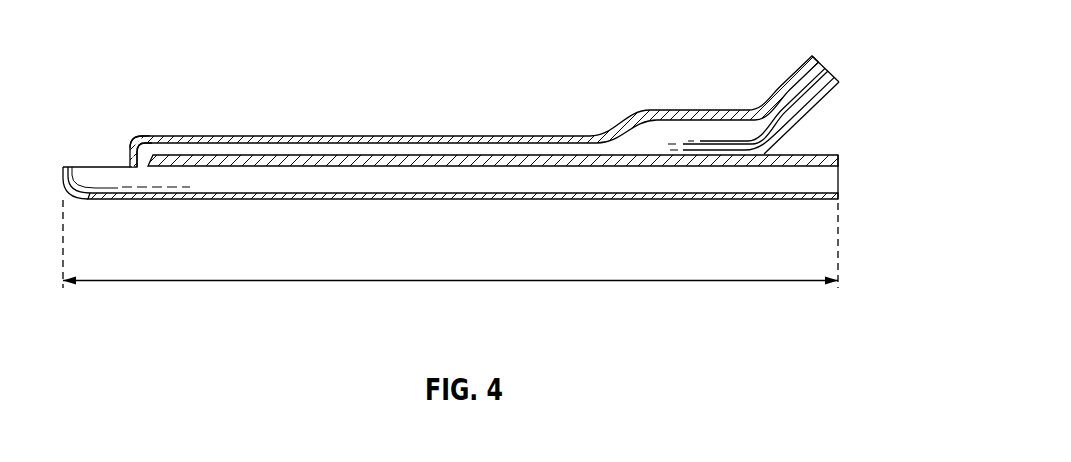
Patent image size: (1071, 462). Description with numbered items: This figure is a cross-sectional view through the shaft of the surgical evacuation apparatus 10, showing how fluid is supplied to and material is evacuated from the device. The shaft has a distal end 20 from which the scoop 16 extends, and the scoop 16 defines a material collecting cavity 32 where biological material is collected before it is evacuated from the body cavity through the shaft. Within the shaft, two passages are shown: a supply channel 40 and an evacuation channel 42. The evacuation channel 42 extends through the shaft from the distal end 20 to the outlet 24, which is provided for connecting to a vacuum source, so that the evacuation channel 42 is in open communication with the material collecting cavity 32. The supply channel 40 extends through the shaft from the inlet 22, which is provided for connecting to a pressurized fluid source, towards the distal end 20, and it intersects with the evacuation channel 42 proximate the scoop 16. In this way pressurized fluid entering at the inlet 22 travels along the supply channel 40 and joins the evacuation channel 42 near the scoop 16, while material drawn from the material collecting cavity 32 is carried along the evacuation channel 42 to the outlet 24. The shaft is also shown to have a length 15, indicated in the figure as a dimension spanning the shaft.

The surgical evacuation apparatus 10 is at (134, 48).
The length 15 is at (458, 283).
The scoop 16 is at (66, 167).
The distal end 20 is at (130, 162).
The inlet 22 is at (826, 66).
The outlet 24 is at (839, 179).
The material collecting cavity 32 is at (115, 197).
The supply channel 40 is at (430, 136).
The evacuation channel 42 is at (520, 198).